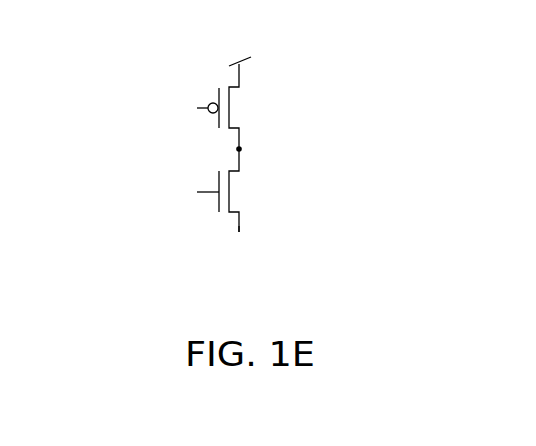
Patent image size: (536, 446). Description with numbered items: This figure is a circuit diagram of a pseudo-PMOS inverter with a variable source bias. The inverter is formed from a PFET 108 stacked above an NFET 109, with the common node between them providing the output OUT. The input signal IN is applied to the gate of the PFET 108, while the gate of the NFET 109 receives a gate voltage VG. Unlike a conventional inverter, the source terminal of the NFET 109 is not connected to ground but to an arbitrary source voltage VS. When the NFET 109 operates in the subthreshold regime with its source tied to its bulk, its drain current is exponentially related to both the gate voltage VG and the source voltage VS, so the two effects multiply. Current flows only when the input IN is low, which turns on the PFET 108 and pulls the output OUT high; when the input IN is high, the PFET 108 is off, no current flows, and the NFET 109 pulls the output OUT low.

The PFET 108 is at (242, 108).
The NFET 109 is at (242, 192).
The input signal IN is at (185, 109).
The output OUT is at (239, 149).
The gate voltage VG is at (190, 190).
The source voltage VS is at (240, 245).